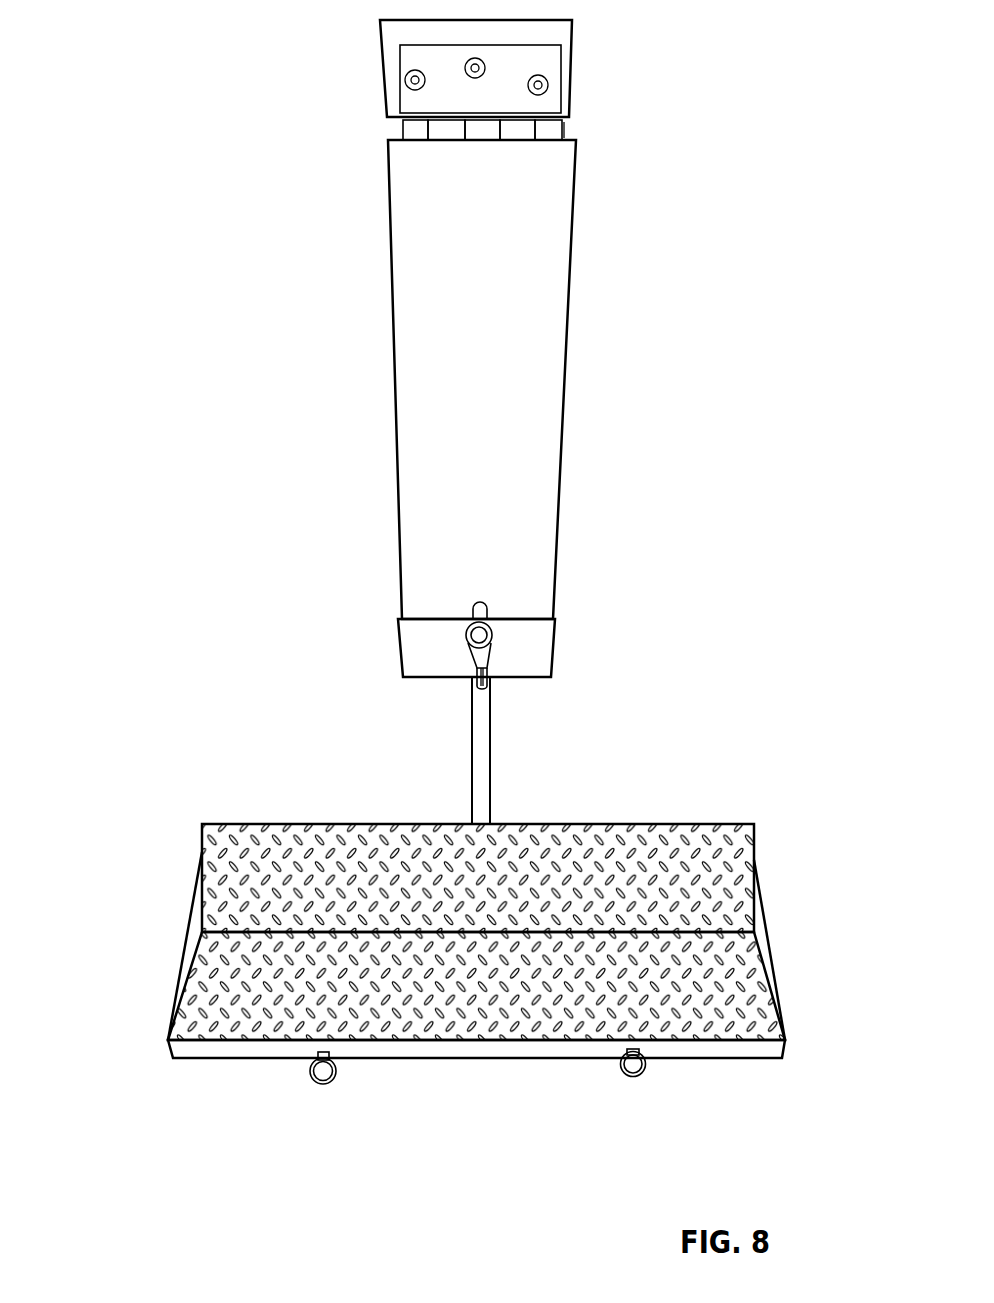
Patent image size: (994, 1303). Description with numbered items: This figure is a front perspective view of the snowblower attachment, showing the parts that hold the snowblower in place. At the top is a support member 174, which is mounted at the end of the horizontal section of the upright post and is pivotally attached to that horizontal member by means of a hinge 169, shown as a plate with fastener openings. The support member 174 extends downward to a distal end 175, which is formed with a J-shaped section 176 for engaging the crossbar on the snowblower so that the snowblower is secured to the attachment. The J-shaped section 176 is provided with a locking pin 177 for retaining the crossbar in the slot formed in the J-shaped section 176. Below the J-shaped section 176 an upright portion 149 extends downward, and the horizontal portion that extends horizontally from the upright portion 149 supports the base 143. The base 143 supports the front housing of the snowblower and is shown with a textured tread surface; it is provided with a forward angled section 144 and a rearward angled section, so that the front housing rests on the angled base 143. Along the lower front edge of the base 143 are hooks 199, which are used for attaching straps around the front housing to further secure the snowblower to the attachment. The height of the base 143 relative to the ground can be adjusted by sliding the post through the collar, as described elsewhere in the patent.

The hinge 169 is at (498, 73).
The support member 174 is at (493, 279).
The distal end 175 is at (352, 611).
The J-shaped section 176 is at (535, 650).
The locking pin 177 is at (475, 640).
The upright portion 149 is at (482, 765).
The forward angled section 144 is at (250, 872).
The base 143 is at (222, 993).
The hooks 199 is at (316, 1086).